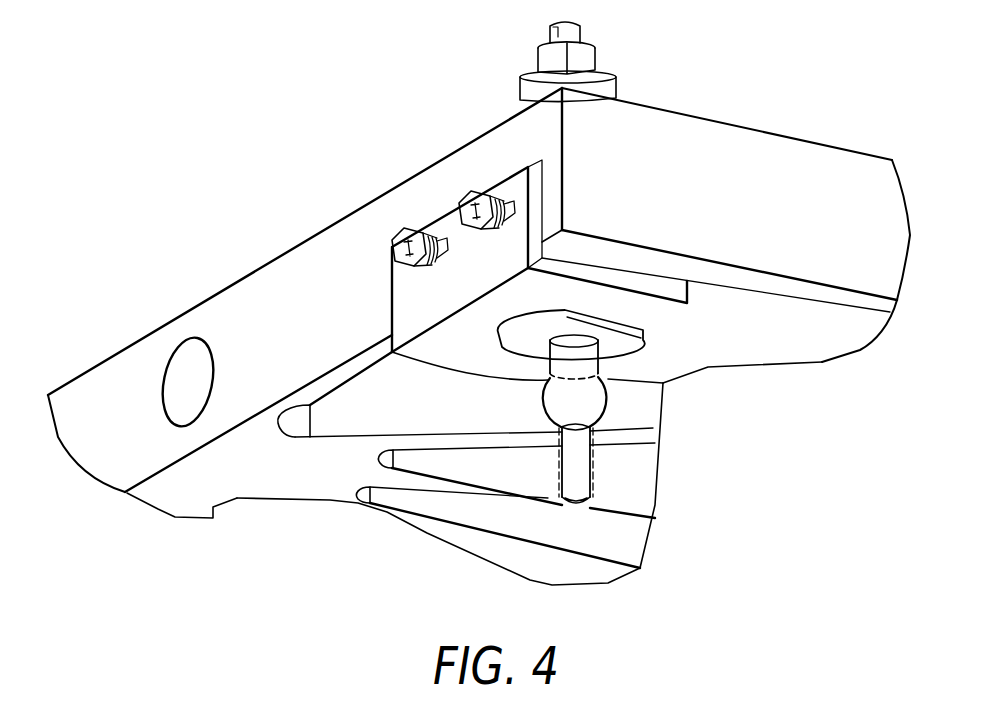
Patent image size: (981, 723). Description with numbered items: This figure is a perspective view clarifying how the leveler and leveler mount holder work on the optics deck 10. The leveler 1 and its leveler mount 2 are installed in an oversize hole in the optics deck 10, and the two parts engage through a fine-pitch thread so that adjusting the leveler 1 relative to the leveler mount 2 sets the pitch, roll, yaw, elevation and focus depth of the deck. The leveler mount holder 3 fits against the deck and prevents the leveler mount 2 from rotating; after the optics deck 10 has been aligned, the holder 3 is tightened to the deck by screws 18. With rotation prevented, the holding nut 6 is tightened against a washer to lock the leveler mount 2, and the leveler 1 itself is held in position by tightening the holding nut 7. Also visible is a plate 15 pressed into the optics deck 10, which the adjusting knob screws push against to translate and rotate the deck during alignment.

The leveler 1 is at (590, 457).
The leveler mount 2 is at (633, 356).
The leveler mount holder 3 is at (672, 290).
The holding nut 6 is at (612, 78).
The holding nut 7 is at (590, 50).
The optics deck 10 is at (353, 212).
The plate 15 is at (182, 427).
The screws 18 is at (413, 260).